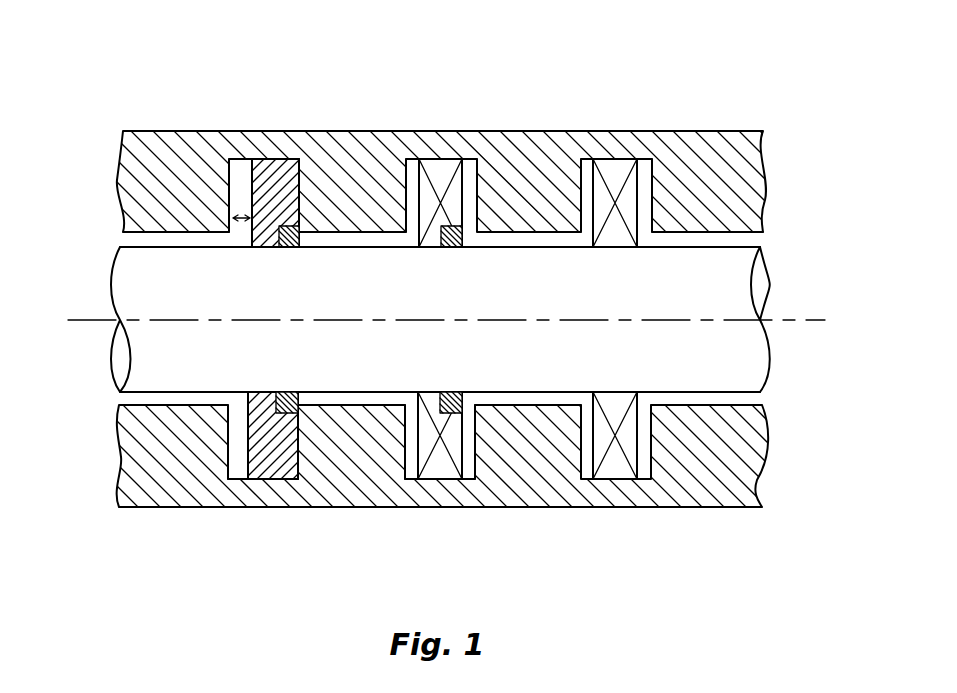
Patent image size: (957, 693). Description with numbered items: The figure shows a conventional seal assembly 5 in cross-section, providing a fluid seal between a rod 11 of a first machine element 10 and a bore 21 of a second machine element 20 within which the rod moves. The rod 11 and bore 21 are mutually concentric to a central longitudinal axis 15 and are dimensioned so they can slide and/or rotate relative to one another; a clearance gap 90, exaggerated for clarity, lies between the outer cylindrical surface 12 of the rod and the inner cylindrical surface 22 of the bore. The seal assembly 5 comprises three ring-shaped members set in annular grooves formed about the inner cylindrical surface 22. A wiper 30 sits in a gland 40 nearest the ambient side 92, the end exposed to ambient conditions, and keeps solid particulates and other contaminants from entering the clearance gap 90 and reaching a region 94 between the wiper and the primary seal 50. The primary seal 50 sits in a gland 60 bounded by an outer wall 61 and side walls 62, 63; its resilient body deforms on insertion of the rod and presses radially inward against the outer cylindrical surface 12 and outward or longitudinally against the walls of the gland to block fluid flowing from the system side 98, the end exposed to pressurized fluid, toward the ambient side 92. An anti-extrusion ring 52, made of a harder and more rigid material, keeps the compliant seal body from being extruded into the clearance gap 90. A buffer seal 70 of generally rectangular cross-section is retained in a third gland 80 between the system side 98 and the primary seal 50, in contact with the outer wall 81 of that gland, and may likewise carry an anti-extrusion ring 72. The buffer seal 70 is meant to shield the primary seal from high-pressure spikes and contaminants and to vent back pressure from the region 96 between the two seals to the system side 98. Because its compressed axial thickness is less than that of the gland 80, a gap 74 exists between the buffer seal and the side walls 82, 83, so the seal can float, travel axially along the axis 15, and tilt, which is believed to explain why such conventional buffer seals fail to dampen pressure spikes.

The seal assembly 5 is at (148, 108).
The first machine element 10 is at (772, 358).
The rod 11 is at (722, 289).
The outer cylindrical surface 12 is at (745, 396).
The central longitudinal axis 15 is at (82, 319).
The second machine element 20 is at (742, 132).
The bore 21 is at (693, 232).
The inner cylindrical surface 22 is at (753, 238).
The wiper 30 is at (615, 172).
The gland 40 is at (585, 170).
The primary seal 50 is at (440, 172).
The anti-extrusion ring 52 is at (450, 248).
The gland 60 is at (407, 170).
The outer wall 61 is at (440, 480).
The side wall 62 is at (405, 458).
The side wall 63 is at (476, 458).
The buffer seal 70 is at (280, 175).
The anti-extrusion ring 72 is at (287, 248).
The gap 74 is at (235, 230).
The gland 80 is at (232, 170).
The outer wall 81 is at (263, 480).
The side wall 82 is at (228, 458).
The side wall 83 is at (299, 453).
The clearance gap 90 is at (128, 238).
The ambient side 92 is at (680, 402).
The region 94 is at (528, 398).
The region 96 is at (353, 398).
The system side 98 is at (173, 406).